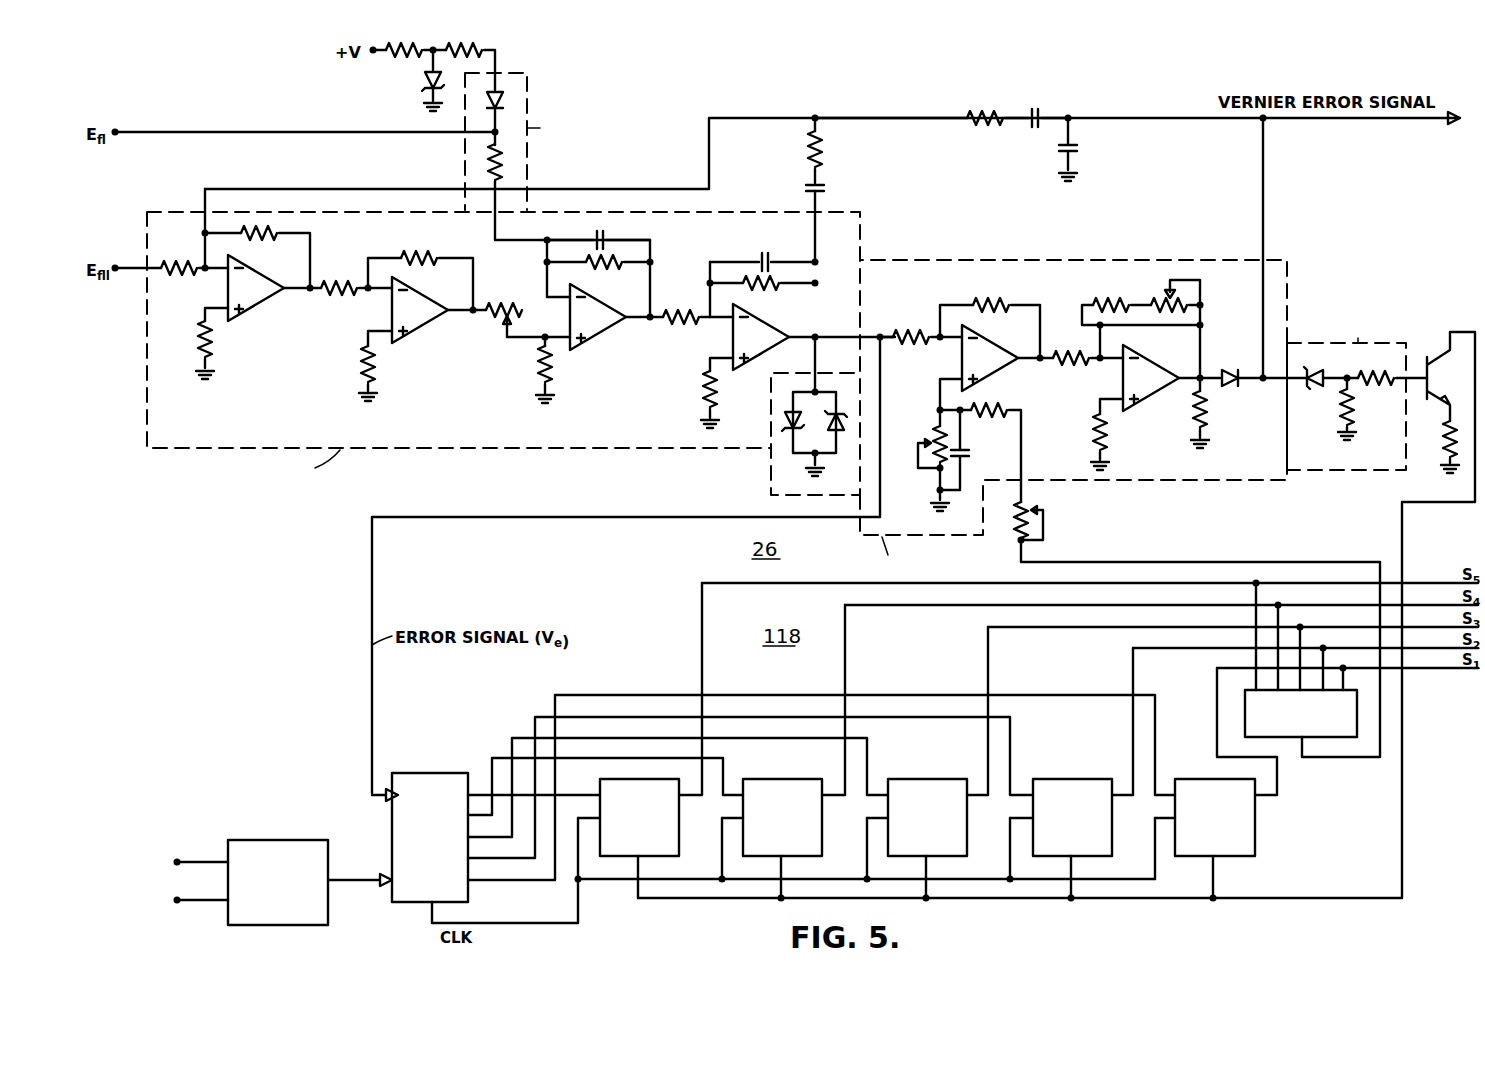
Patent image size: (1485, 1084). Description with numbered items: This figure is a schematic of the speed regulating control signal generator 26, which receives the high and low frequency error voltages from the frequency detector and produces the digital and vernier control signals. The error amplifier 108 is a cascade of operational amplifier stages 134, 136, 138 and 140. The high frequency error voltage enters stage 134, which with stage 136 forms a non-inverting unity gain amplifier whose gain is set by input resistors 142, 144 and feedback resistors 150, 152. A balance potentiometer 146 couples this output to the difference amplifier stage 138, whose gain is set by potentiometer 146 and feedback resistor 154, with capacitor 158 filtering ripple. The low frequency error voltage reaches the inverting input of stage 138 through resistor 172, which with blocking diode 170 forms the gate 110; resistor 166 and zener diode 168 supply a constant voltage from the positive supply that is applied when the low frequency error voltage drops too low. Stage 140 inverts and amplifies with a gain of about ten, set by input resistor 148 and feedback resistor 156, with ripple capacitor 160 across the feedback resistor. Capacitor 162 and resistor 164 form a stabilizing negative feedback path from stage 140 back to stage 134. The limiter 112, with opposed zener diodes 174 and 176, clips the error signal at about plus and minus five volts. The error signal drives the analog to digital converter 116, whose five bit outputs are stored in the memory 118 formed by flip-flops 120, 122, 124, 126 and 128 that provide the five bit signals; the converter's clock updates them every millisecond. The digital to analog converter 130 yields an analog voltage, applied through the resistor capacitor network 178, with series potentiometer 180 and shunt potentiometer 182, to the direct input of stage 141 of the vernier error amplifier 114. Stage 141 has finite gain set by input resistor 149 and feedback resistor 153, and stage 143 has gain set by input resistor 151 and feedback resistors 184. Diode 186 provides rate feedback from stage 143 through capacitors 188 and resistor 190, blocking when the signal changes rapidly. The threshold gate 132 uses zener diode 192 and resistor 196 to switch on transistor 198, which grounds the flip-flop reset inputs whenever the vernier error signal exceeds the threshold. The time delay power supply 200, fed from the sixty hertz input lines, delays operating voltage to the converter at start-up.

The control signal generator 26 is at (764, 549).
The error amplifier 108 is at (475, 450).
The gate 110 is at (528, 160).
The limiter 112 is at (770, 492).
The vernier error amplifier 114 is at (1152, 480).
The analog to digital converter 116 is at (432, 773).
The memory 118 is at (782, 636).
The flip-flop 120 is at (1255, 845).
The flip-flop 122 is at (1112, 845).
The flip-flop 124 is at (967, 845).
The flip-flop 126 is at (822, 845).
The flip-flop 128 is at (679, 845).
The digital to analog converter 130 is at (1275, 738).
The threshold gate 132 is at (1315, 474).
The operational amplifier stage 134 is at (250, 310).
The operational amplifier stage 136 is at (415, 330).
The operational amplifier stage 138 is at (603, 335).
The operational amplifier stage 140 is at (784, 353).
The operational amplifier stage 141 is at (985, 375).
The input resistor 142 is at (181, 270).
The operational amplifier stage 143 is at (1147, 391).
The input resistor 144 is at (340, 280).
The potentiometer 146 is at (503, 305).
The input resistor 148 is at (682, 312).
The input resistor 149 is at (913, 330).
The feedback resistor 150 is at (258, 240).
The input resistor 151 is at (1070, 368).
The feedback resistor 152 is at (420, 250).
The feedback resistor 153 is at (992, 297).
The feedback resistor 154 is at (600, 270).
The feedback resistor 156 is at (760, 292).
The capacitor 158 is at (608, 232).
The ripple filter capacitor 160 is at (765, 252).
The capacitor 162 is at (826, 188).
The resistor 164 is at (822, 150).
The resistor 166 is at (402, 58).
The zener diode 168 is at (425, 97).
The blocking diode 170 is at (503, 100).
The resistor 172 is at (490, 160).
The zener diode 174 is at (785, 420).
The zener diode 176 is at (848, 420).
The resistor capacitor network 178 is at (1007, 441).
The potentiometer 180 is at (1014, 522).
The potentiometer 182 is at (935, 438).
The feedback resistors 184 is at (1112, 293).
The diode 186 is at (1236, 387).
The capacitors 188 is at (1057, 150).
The resistor 190 is at (990, 110).
The zener diode 192 is at (1318, 389).
The resistor 196 is at (1375, 372).
The transistor 198 is at (1437, 408).
The time delay power supply 200 is at (283, 840).